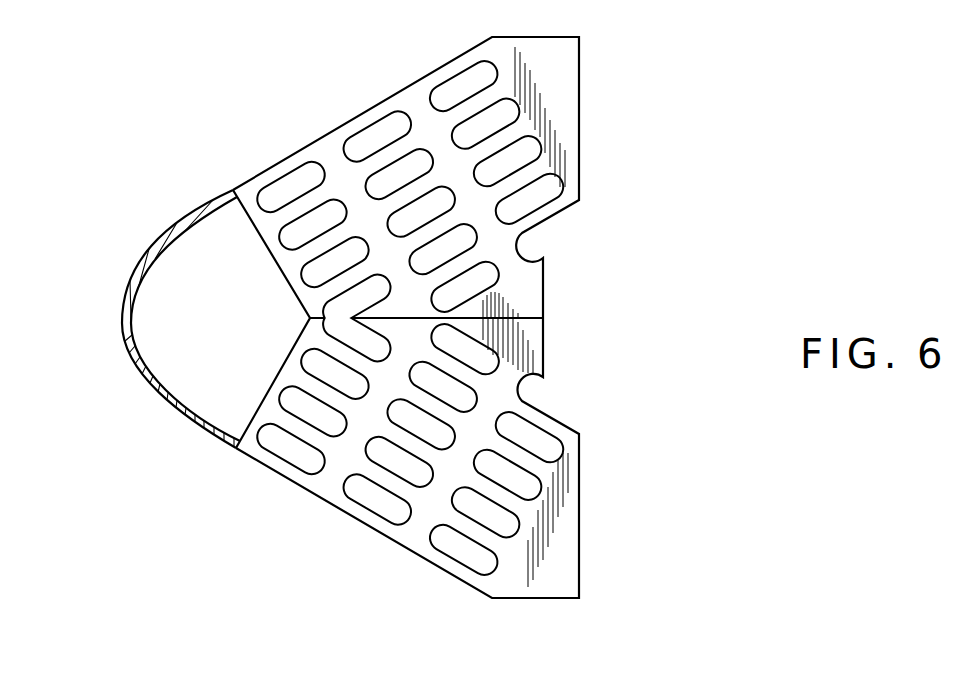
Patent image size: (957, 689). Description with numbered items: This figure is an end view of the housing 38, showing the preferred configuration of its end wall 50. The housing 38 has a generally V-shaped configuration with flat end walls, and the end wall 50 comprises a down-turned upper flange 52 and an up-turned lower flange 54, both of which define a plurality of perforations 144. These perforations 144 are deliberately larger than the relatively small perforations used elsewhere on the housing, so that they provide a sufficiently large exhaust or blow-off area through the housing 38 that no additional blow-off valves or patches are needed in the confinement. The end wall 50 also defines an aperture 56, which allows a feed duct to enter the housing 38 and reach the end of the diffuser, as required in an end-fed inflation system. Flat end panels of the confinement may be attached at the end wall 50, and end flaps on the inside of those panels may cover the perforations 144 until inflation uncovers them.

The housing 38 is at (208, 202).
The end wall 50 is at (562, 314).
The down-turned upper flange 52 is at (580, 150).
The up-turned lower flange 54 is at (448, 458).
The aperture 56 is at (244, 319).
The perforations 144 is at (367, 498).